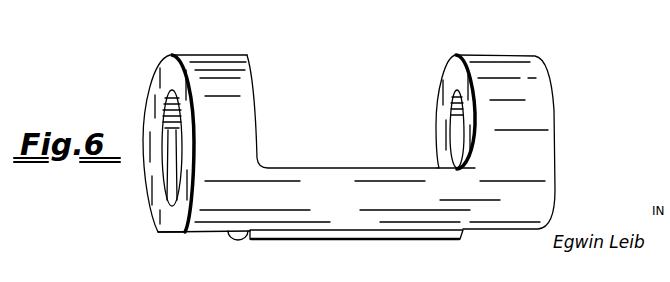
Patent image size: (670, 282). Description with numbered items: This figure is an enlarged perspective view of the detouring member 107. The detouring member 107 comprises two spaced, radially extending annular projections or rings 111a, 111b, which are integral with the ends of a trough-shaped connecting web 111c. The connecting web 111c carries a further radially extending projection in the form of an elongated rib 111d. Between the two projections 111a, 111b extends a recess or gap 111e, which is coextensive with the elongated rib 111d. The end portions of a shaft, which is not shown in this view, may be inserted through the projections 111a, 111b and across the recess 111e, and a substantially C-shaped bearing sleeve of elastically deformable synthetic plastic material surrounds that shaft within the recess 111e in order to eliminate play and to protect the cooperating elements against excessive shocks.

The annular projection 111a is at (487, 66).
The annular projection 111b is at (213, 63).
The connecting web 111c is at (433, 196).
The elongated rib 111d is at (348, 238).
The recess 111e is at (330, 95).
The detouring member 107 is at (211, 237).